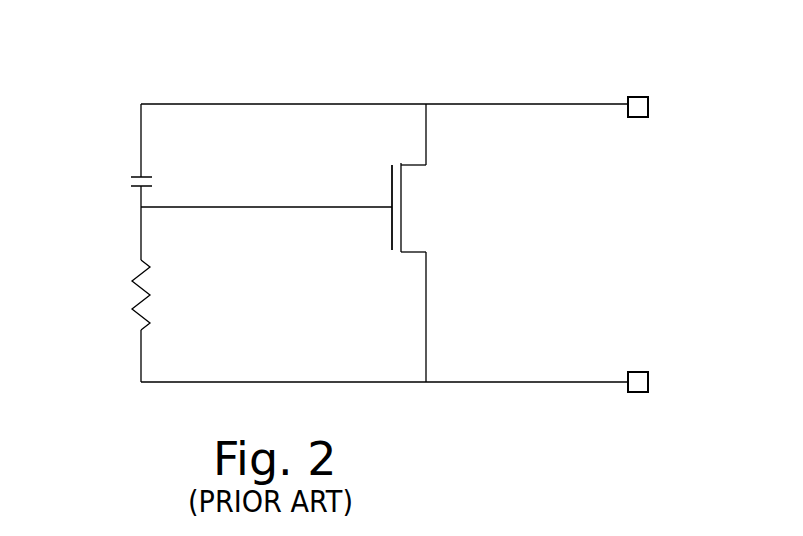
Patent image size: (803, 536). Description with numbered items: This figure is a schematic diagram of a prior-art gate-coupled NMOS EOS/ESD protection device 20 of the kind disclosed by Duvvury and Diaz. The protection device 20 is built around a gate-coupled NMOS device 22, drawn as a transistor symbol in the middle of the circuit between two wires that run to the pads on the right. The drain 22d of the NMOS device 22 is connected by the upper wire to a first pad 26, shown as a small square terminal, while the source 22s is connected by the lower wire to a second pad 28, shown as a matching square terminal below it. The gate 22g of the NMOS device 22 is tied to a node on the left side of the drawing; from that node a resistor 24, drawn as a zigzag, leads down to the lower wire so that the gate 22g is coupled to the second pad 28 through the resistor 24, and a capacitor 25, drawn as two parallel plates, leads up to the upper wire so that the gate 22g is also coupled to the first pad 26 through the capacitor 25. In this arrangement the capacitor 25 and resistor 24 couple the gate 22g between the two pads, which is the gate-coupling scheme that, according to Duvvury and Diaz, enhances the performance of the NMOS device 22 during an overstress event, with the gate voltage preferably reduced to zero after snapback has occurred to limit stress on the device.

The gate-coupled NMOS EOS/ESD protection device 20 is at (643, 236).
The gate-coupled NMOS device 22 is at (388, 224).
The drain 22d is at (413, 163).
The gate 22g is at (390, 190).
The source 22s is at (412, 256).
The resistor 24 is at (136, 285).
The capacitor 25 is at (119, 181).
The first pad 26 is at (628, 100).
The second pad 28 is at (648, 372).